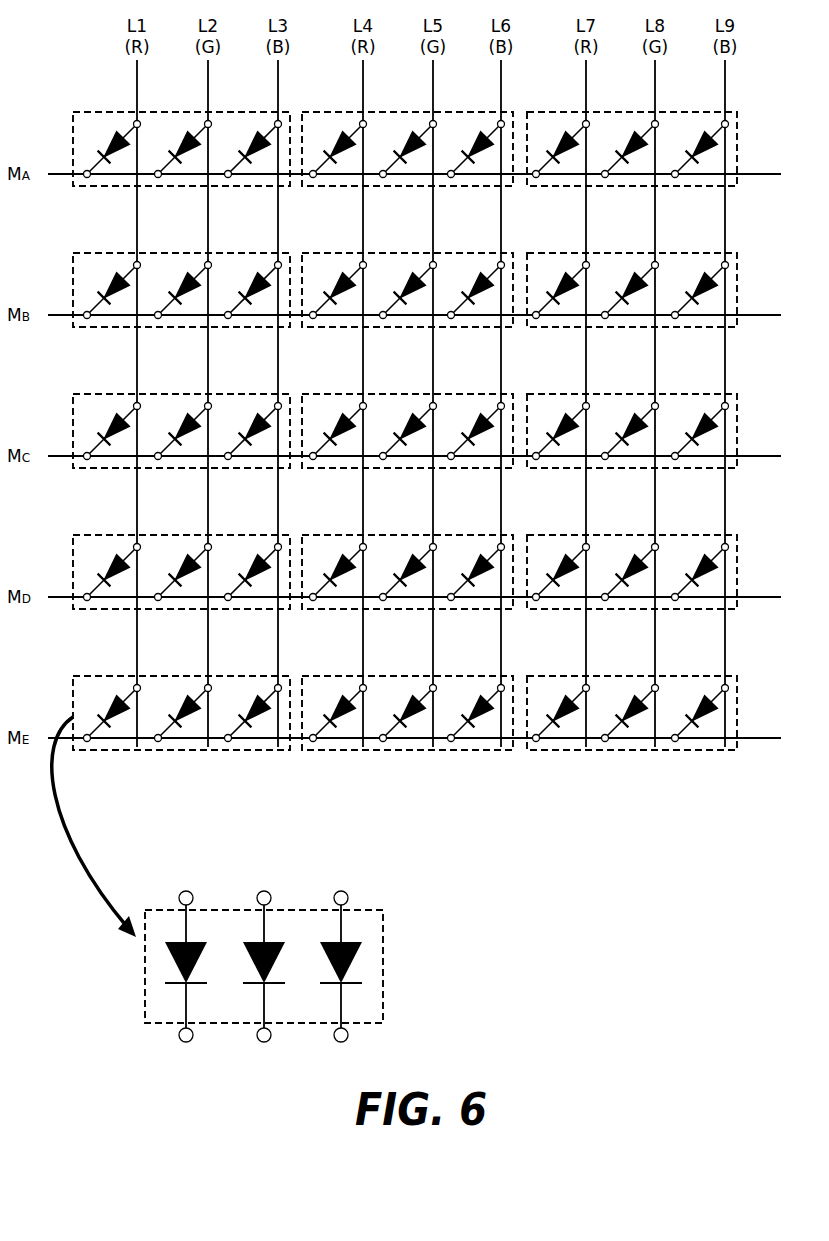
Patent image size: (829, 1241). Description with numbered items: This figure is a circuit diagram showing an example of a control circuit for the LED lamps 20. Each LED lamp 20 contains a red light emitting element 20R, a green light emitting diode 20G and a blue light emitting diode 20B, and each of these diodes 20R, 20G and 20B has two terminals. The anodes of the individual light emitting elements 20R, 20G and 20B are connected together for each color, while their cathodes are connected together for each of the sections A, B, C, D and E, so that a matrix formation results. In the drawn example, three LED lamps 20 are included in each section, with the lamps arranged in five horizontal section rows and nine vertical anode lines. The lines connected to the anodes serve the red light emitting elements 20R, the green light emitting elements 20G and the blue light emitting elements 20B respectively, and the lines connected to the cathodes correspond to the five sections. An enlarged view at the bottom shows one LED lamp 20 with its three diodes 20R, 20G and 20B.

The LED lamp 20 is at (426, 551).
The red light emitting element 20R is at (200, 942).
The green light emitting diode 20G is at (278, 942).
The blue light emitting diode 20B is at (356, 942).